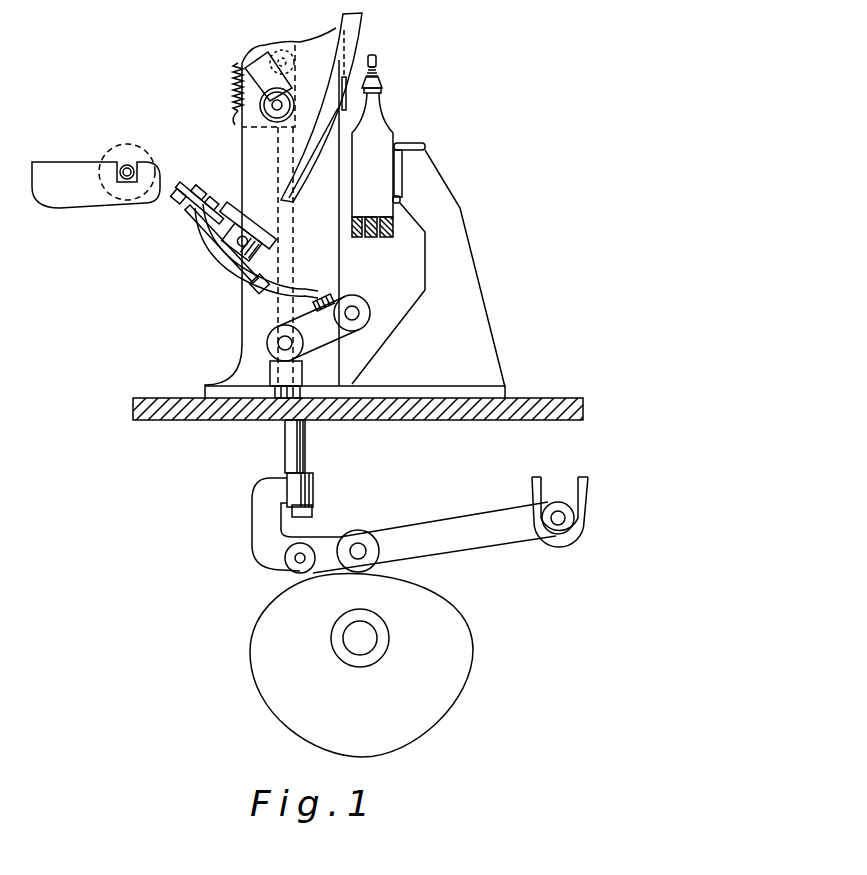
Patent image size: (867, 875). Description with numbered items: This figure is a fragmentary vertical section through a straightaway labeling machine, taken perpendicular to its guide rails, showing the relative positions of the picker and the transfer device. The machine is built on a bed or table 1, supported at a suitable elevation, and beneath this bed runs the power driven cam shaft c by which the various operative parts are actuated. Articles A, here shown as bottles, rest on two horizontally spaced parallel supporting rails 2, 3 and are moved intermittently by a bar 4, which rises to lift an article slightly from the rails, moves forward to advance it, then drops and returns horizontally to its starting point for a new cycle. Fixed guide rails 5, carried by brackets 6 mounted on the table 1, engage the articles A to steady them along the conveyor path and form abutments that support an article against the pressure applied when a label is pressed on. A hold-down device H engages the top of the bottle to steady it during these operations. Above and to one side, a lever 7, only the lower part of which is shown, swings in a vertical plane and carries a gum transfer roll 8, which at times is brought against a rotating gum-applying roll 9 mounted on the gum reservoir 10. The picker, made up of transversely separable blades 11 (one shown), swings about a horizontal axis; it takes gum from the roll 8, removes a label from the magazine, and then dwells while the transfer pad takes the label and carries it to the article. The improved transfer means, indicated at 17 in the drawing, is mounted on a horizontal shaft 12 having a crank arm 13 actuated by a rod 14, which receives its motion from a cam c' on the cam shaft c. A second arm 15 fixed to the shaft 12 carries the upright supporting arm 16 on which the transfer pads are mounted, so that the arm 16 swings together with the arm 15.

The bed or table 1 is at (537, 403).
The supporting rail 2 is at (353, 230).
The supporting rail 3 is at (386, 234).
The bar 4 is at (372, 237).
The fixed guide rails 5 is at (399, 200).
The brackets 6 is at (465, 278).
The lever 7 is at (262, 72).
The gum transfer roll 8 is at (242, 115).
The gum-applying roll 9 is at (130, 150).
The gum reservoir 10 is at (60, 170).
The picker blades 11 is at (300, 160).
The horizontal shaft 12 is at (360, 314).
The crank arm 13 is at (320, 337).
The rod 14 is at (288, 442).
The second arm 15 is at (323, 297).
The upright supporting arm 16 is at (283, 290).
The clamp arm 17 is at (210, 256).
The articles A is at (373, 140).
The hold-down device H is at (377, 77).
The cam shaft c is at (372, 635).
The cam c' is at (419, 617).